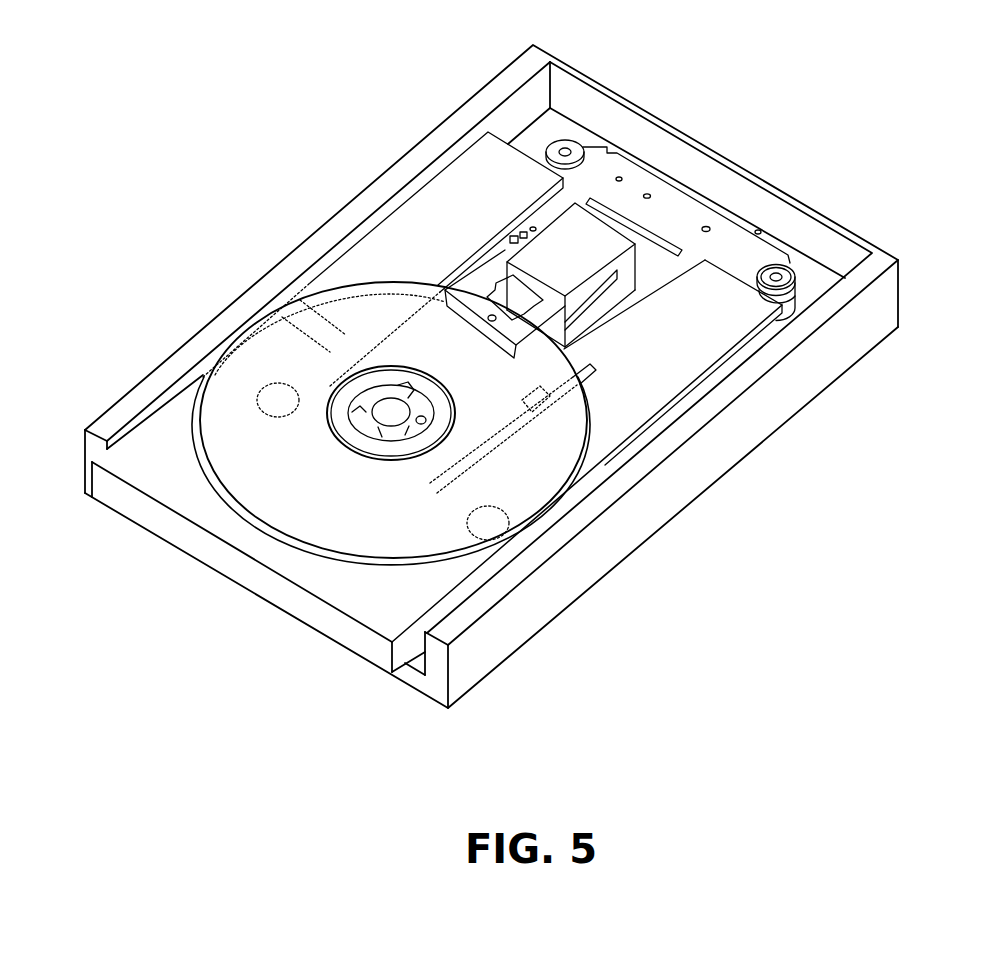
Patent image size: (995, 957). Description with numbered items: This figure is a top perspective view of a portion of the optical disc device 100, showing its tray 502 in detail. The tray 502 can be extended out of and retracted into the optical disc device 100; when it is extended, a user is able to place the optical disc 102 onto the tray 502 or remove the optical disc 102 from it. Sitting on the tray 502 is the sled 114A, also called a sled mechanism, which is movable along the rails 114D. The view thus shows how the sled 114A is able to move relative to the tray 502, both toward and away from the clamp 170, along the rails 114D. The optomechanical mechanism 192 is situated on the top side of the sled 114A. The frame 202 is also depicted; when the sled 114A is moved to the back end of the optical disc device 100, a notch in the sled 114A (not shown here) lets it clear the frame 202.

The optical disc device 100 is at (152, 288).
The optical disc 102 is at (252, 480).
The clamp 170 is at (350, 376).
The optomechanical mechanism 192 is at (508, 297).
The sled 114A is at (582, 243).
The rails 114D is at (398, 300).
The frame 202 is at (747, 254).
The tray 502 is at (365, 610).